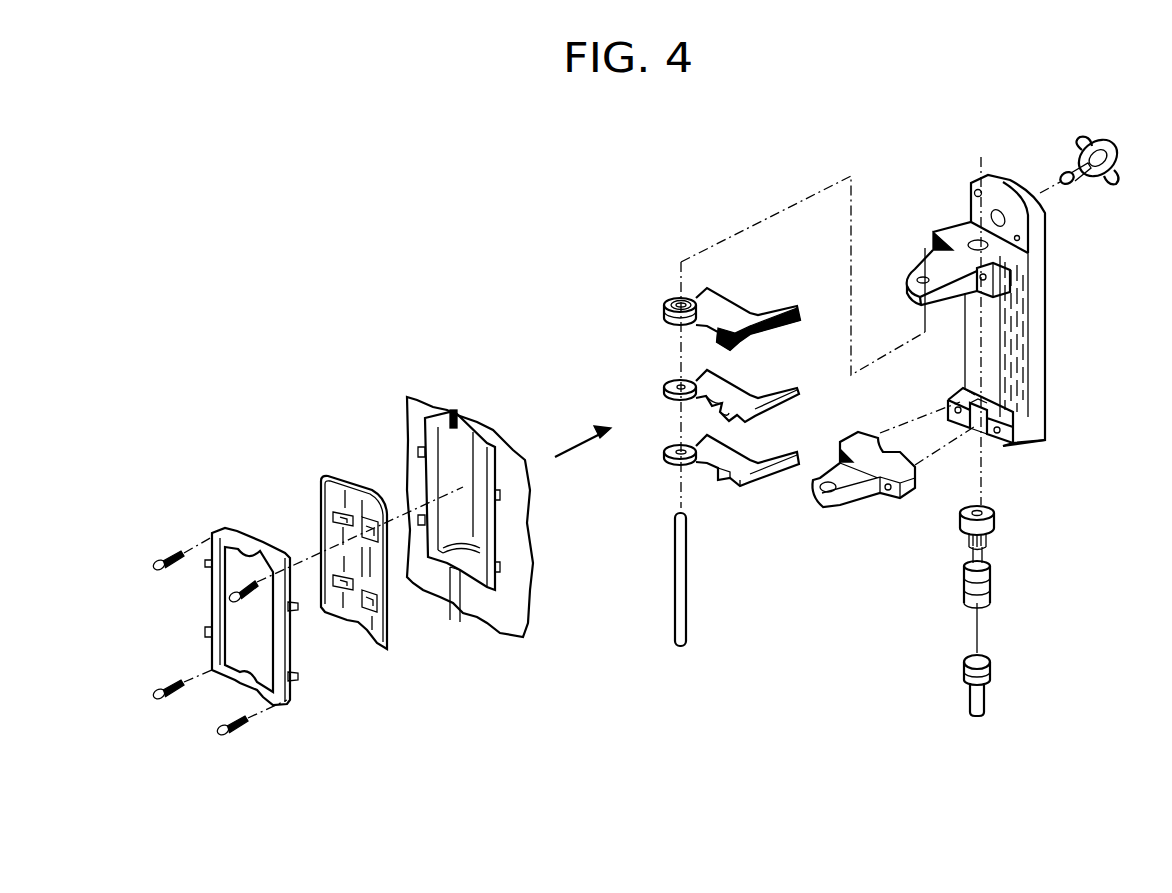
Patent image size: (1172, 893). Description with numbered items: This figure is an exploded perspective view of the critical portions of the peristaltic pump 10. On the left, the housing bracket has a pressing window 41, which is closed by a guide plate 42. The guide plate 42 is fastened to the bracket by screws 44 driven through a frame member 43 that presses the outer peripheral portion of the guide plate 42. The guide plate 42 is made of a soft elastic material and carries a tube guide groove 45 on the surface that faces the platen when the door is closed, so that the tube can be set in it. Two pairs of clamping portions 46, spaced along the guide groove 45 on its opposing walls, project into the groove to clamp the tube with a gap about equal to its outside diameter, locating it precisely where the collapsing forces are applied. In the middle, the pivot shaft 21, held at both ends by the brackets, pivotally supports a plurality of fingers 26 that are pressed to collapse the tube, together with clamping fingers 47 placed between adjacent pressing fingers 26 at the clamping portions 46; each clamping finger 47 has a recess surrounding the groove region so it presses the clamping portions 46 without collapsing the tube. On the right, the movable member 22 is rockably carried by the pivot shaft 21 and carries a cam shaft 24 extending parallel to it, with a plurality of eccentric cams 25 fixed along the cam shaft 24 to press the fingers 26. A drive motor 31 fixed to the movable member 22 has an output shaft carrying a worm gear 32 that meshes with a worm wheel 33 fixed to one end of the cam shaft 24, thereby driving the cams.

The pump 10 is at (458, 370).
The pressing window 41 is at (442, 443).
The guide plate 42 is at (320, 492).
The frame member 43 is at (207, 615).
The screws 44 is at (160, 698).
The tube guide groove 45 is at (370, 567).
The clamping portions 46 is at (367, 527).
The pivot shaft 21 is at (690, 627).
The fingers 26 is at (763, 323).
The clamping fingers 47 is at (765, 398).
The movable member 22 is at (1040, 333).
The drive motor 31 is at (1100, 145).
The worm gear 32 is at (1060, 163).
The worm wheel 33 is at (994, 518).
The eccentric cams 25 is at (990, 596).
The cam shaft 24 is at (983, 700).